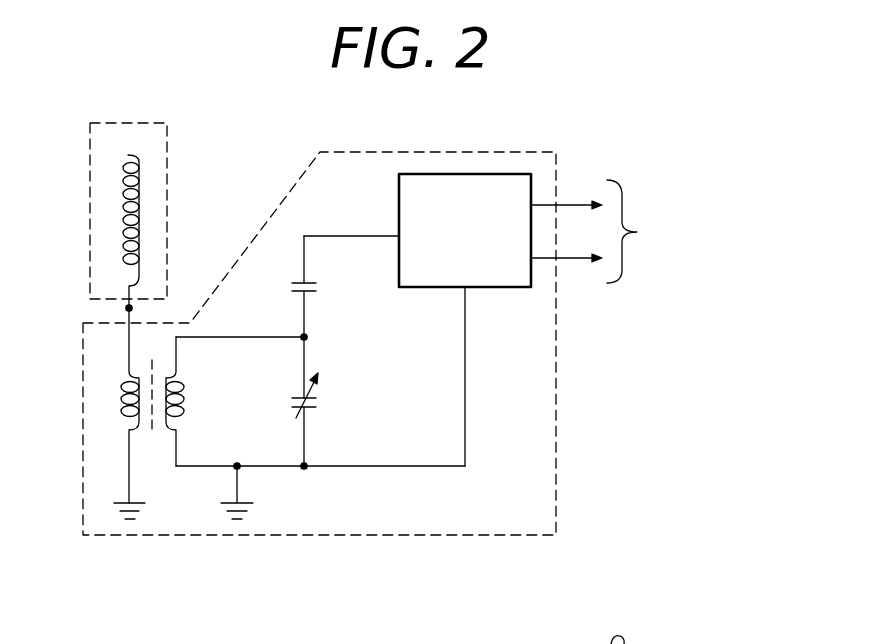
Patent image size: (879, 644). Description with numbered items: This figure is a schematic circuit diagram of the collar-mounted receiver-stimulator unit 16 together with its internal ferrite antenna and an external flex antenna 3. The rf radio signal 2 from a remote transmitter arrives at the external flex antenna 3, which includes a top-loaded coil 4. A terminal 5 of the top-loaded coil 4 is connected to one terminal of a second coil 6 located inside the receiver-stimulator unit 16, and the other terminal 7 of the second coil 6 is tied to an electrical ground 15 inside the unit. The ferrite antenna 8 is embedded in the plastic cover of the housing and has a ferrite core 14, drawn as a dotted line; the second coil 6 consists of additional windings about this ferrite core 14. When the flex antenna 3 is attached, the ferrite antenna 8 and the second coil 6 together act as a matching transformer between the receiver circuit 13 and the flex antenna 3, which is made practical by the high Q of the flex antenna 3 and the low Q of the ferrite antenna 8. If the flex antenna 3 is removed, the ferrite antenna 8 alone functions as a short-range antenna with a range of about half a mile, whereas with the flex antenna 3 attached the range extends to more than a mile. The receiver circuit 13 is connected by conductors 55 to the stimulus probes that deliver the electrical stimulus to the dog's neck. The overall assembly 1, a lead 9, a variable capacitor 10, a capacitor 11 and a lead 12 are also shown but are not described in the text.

The receiver unit 1 is at (92, 548).
The rf radio signal 2 is at (150, 42).
The external flex antenna 3 is at (90, 238).
The top-loaded coil 4 is at (140, 203).
The terminal 5 is at (129, 308).
The second coil 6 is at (125, 386).
The other terminal 7 is at (128, 477).
The ferrite antenna 8 is at (184, 411).
The lead 9 is at (262, 337).
The variable tuning capacitor 10 is at (310, 406).
The coupling capacitor 11 is at (297, 280).
The receiver input lead 12 is at (382, 236).
The receiver circuit 13 is at (512, 289).
The ferrite core 14 is at (153, 432).
The electrical ground 15 is at (282, 468).
The collar-mounted receiver-stimulator unit 16 is at (457, 152).
The conductors 55 is at (545, 198).